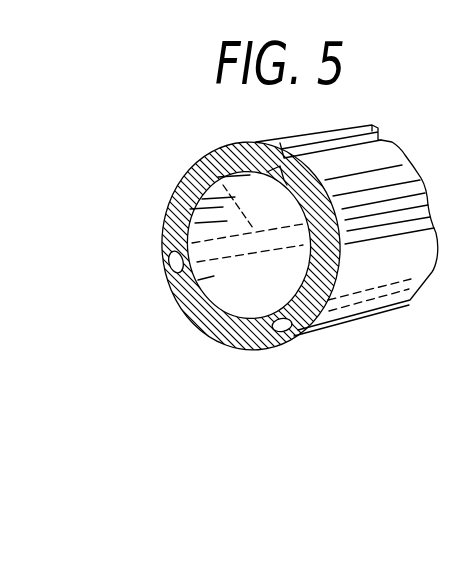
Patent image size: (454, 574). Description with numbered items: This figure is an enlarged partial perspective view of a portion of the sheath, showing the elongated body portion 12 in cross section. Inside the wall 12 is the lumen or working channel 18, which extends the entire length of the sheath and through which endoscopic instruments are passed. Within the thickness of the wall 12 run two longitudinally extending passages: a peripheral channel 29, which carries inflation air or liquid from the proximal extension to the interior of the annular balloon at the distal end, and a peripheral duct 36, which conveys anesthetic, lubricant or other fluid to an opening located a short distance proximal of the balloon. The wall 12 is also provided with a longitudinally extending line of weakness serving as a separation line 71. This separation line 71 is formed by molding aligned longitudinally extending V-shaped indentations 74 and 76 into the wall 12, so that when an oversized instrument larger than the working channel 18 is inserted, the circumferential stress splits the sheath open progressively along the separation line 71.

The elongated body portion 12 is at (406, 251).
The working channel 18 is at (233, 293).
The peripheral channel 29 is at (200, 153).
The peripheral duct 36 is at (297, 335).
The separation line 71 is at (363, 140).
The V-shaped indentation 74 is at (292, 135).
The V-shaped indentation 76 is at (247, 257).